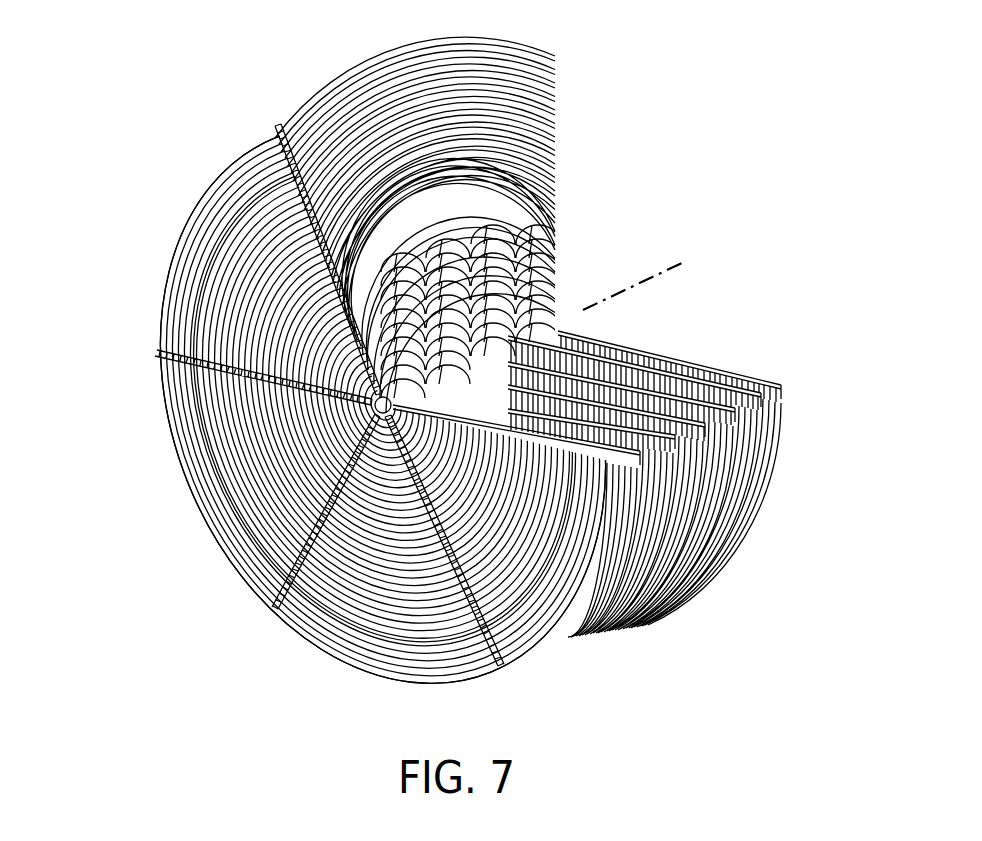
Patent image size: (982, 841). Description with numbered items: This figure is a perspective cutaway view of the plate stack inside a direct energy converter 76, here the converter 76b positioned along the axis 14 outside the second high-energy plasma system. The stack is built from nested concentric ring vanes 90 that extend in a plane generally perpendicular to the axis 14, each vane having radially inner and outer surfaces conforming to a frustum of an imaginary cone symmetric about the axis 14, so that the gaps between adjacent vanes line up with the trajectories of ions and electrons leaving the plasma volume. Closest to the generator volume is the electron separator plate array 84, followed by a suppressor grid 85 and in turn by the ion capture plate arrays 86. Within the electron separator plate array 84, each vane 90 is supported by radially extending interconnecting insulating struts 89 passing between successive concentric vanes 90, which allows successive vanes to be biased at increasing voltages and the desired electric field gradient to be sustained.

The direct energy converter 76 is at (118, 165).
The direct energy converter 76b is at (614, 650).
The electron separator plate array 84 is at (243, 122).
The suppressor grid 85 is at (265, 110).
The ion capture plate array 86 is at (415, 213).
The insulating strut 89 is at (217, 370).
The ring vane 90 is at (185, 266).
The axis 14 is at (627, 274).